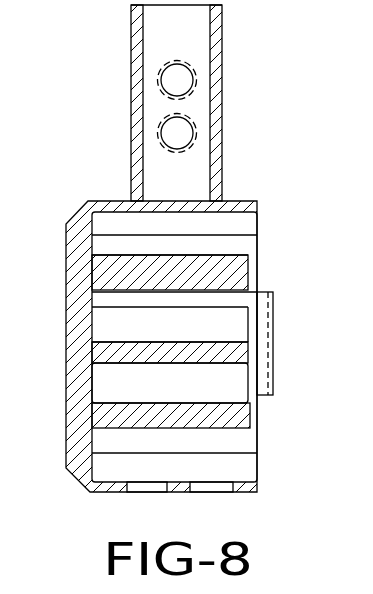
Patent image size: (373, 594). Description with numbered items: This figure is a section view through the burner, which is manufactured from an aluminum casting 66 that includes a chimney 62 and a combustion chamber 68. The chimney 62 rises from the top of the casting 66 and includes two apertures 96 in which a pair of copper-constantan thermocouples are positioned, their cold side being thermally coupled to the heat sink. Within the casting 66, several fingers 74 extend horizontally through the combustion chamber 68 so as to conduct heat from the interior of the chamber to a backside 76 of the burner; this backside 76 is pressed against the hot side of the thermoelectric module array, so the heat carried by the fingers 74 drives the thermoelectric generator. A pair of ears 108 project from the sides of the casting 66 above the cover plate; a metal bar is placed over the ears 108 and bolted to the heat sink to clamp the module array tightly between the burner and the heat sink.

The chimney 62 is at (131, 71).
The aluminum casting 66 is at (40, 182).
The combustion chamber 68 is at (237, 246).
The fingers 74 is at (247, 270).
The backside 76 is at (65, 300).
The apertures 96 is at (190, 68).
The ears 108 is at (273, 325).